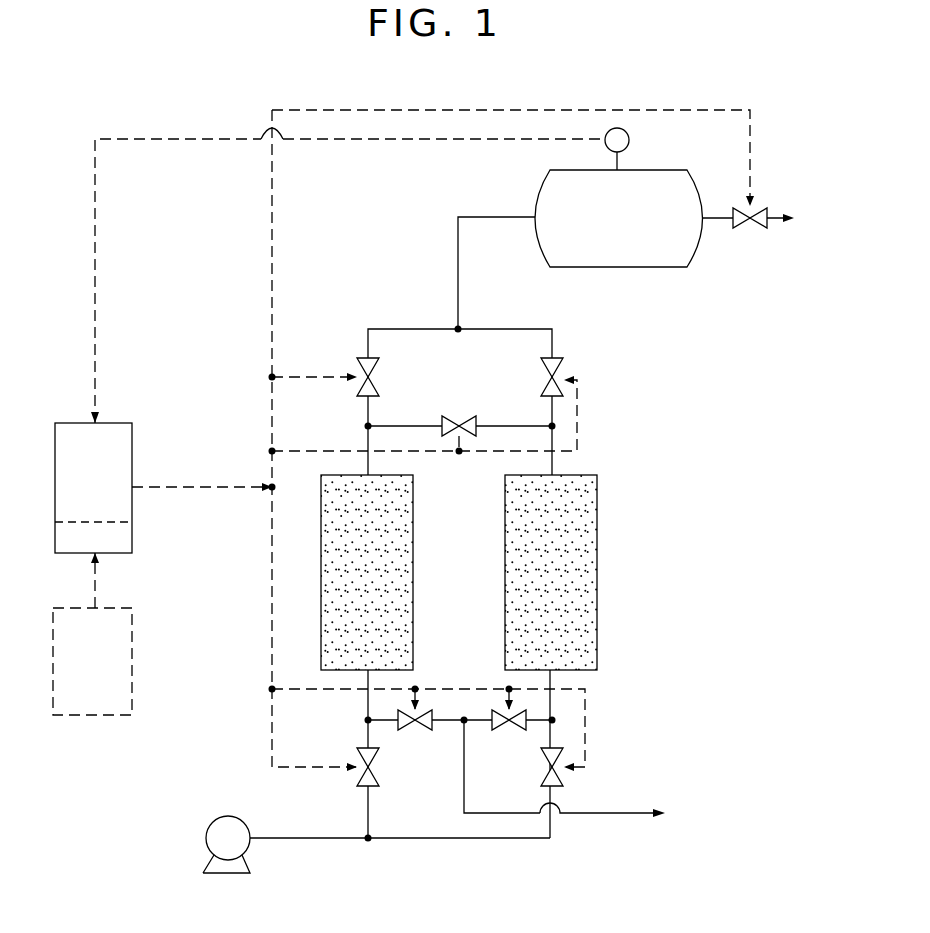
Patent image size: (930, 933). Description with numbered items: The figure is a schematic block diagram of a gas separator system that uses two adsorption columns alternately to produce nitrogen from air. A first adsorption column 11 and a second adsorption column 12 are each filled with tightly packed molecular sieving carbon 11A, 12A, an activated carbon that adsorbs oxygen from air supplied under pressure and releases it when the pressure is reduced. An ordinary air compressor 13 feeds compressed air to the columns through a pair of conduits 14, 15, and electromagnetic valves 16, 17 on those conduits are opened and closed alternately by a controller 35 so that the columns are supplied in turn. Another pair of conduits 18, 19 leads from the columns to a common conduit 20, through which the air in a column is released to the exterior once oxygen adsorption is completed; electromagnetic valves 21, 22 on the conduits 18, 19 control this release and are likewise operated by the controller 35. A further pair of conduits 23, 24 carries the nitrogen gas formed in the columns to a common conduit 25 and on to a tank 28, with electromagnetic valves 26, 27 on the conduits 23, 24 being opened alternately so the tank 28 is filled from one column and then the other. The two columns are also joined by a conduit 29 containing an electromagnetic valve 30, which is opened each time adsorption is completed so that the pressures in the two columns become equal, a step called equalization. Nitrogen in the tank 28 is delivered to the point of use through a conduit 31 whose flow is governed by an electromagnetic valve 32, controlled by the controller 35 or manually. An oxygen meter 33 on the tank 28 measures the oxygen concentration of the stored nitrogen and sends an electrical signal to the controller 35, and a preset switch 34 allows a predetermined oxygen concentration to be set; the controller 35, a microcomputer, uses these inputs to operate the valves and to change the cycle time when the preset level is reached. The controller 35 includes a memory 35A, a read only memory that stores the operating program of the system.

The first adsorption column 11 is at (414, 545).
The molecular sieving carbon 11A is at (405, 618).
The second adsorption column 12 is at (597, 545).
The molecular sieving carbon 12A is at (590, 618).
The air compressor 13 is at (230, 816).
The conduit 14 is at (368, 795).
The conduit 15 is at (528, 840).
The electromagnetic valve 16 is at (357, 752).
The electromagnetic valve 17 is at (562, 780).
The conduit 18 is at (446, 722).
The conduit 19 is at (482, 722).
The common conduit 20 is at (613, 815).
The electromagnetic valve 21 is at (412, 730).
The electromagnetic valve 22 is at (520, 730).
The conduit 23 is at (368, 333).
The conduit 24 is at (553, 332).
The common conduit 25 is at (458, 252).
The electromagnetic valve 26 is at (358, 393).
The electromagnetic valve 27 is at (565, 372).
The tank 28 is at (673, 267).
The conduit 29 is at (414, 426).
The electromagnetic valve 30 is at (466, 417).
The conduit 31 is at (772, 210).
The electromagnetic valve 32 is at (758, 230).
The oxygen meter 33 is at (630, 140).
The preset switch 34 is at (86, 716).
The controller 35 is at (78, 423).
The memory 35A is at (72, 553).